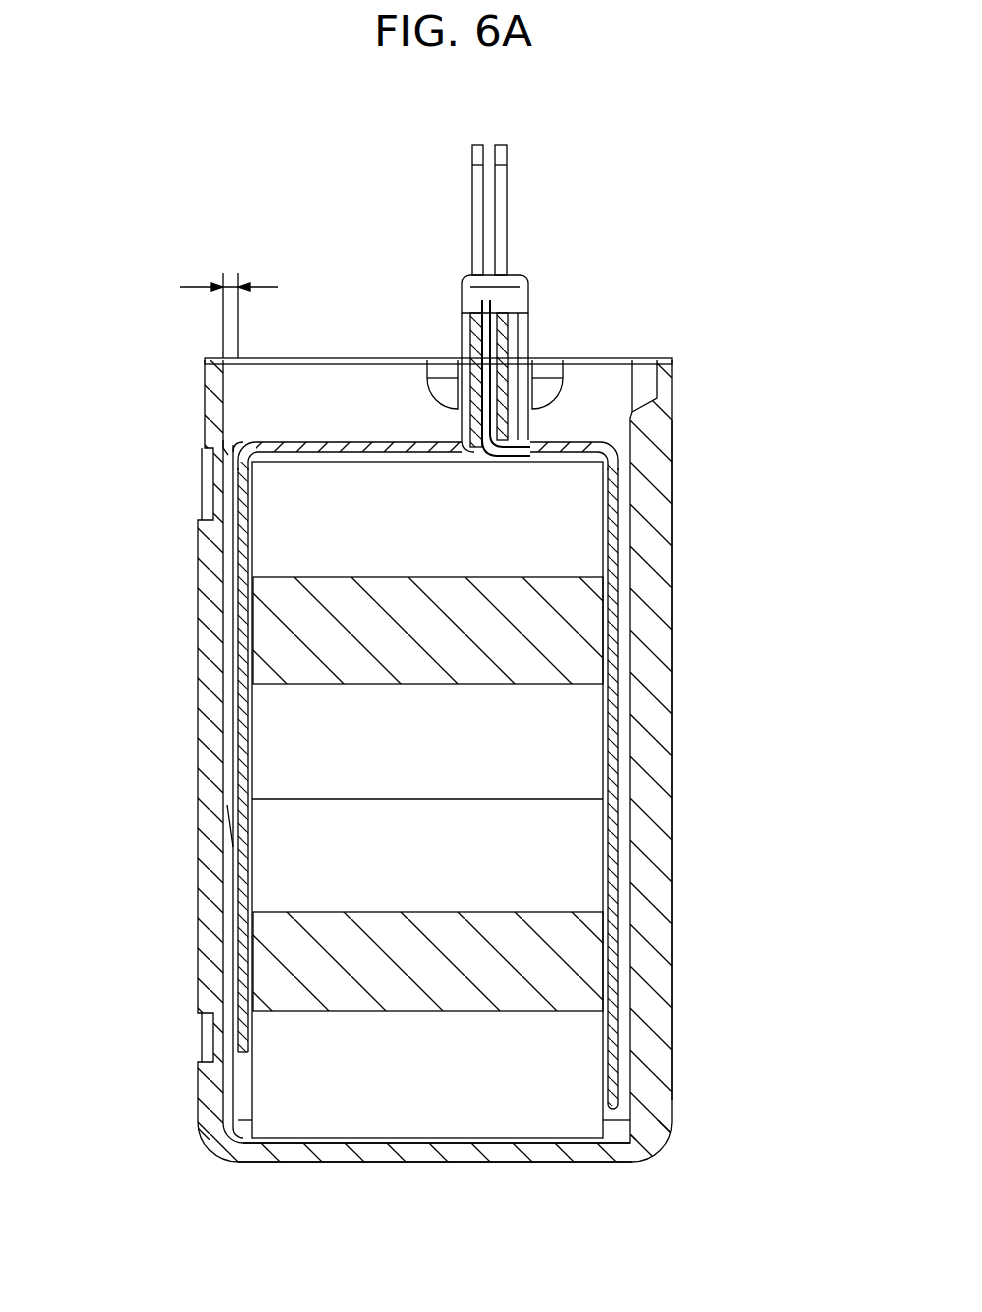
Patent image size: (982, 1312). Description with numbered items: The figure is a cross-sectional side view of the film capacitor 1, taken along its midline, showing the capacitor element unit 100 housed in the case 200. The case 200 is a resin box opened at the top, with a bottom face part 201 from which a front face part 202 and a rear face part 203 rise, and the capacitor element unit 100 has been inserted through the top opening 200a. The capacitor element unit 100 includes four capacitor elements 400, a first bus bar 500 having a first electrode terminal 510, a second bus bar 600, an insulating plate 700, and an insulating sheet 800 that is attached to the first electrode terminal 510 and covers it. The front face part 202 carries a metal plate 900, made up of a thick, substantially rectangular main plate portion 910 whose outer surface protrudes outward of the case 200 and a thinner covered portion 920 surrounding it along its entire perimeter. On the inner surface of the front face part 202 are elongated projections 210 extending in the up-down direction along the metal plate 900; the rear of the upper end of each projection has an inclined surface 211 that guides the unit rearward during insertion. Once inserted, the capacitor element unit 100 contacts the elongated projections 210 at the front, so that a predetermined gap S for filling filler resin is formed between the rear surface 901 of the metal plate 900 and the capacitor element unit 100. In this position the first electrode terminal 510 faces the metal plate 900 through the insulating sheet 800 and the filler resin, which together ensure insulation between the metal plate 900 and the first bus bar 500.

The film capacitor 1 is at (703, 295).
The capacitor element unit 100 is at (410, 432).
The case 200 is at (682, 446).
The top opening 200a is at (585, 360).
The bottom face part 201 is at (435, 1163).
The front face part 202 is at (205, 505).
The rear face part 203 is at (673, 578).
The elongated projection 210 is at (253, 896).
The inclined surface 211 is at (253, 797).
The capacitor element 400 is at (585, 700).
The first bus bar 500 is at (350, 445).
The first electrode terminal 510 is at (235, 640).
The second bus bar 600 is at (616, 615).
The insulating plate 700 is at (532, 286).
The insulating sheet 800 is at (228, 455).
The metal plate 900 is at (197, 760).
The rear surface 901 is at (243, 565).
The main plate portion 910 is at (197, 897).
The covered portion 920 is at (235, 1040).
The gap S is at (229, 296).